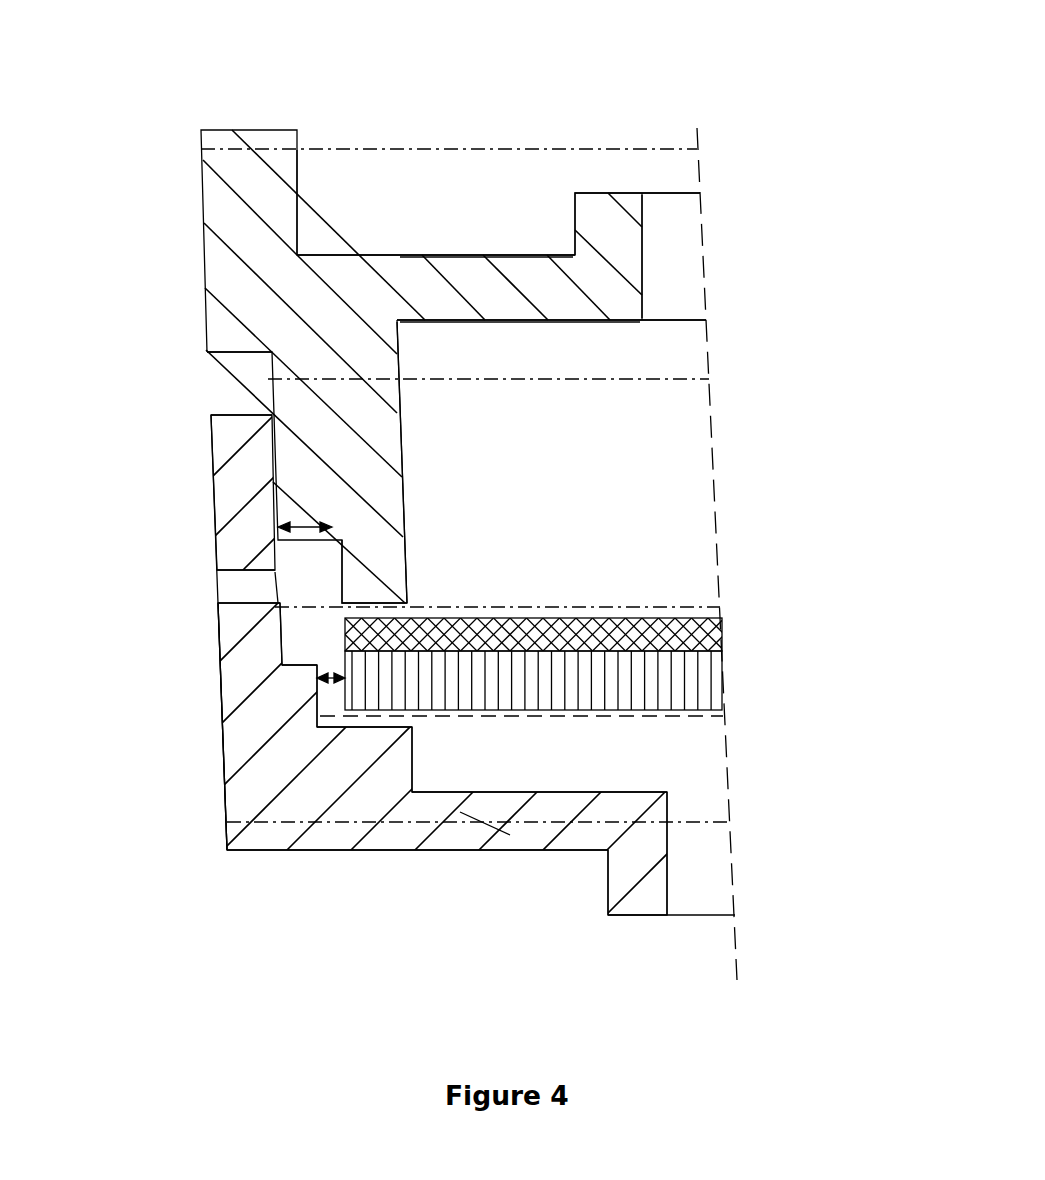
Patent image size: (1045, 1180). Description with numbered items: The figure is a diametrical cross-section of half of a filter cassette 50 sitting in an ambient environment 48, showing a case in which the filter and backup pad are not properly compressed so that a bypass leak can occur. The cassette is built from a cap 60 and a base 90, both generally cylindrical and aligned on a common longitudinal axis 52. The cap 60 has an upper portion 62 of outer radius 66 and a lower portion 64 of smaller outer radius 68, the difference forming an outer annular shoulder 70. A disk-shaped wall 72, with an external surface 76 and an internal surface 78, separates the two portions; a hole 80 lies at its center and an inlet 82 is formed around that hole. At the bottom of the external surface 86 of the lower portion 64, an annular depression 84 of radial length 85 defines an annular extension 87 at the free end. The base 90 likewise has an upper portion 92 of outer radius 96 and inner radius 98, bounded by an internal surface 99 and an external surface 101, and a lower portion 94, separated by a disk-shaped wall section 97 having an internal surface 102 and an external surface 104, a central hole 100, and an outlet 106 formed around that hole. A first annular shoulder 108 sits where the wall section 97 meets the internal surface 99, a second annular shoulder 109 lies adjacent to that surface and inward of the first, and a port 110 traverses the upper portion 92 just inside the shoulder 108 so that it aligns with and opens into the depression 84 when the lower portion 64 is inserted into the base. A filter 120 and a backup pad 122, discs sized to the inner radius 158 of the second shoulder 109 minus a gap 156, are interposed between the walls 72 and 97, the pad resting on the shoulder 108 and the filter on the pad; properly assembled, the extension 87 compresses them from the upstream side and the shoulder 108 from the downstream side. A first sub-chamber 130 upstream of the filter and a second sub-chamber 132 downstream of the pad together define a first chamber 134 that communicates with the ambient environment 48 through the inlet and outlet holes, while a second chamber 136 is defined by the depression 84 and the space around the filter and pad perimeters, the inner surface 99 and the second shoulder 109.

The ambient environment 48 is at (262, 25).
The filter cassette 50 is at (758, 80).
The longitudinal axis 52 is at (708, 335).
The cap 60 is at (158, 294).
The upper portion 62 is at (312, 188).
The lower portion 64 is at (405, 455).
The outer radius 66 is at (318, 149).
The outer radius 68 is at (498, 380).
The outer annular shoulder 70 is at (222, 352).
The wall 72 is at (462, 286).
The external surface 76 is at (330, 255).
The internal surface 78 is at (428, 322).
The hole 80 is at (690, 257).
The inlet 82 is at (595, 210).
The annular depression 84 is at (310, 567).
The radial length 85 is at (300, 525).
The external surface 86 is at (270, 463).
The annular extension 87 is at (407, 580).
The base 90 is at (188, 810).
The upper portion 92 is at (425, 756).
The lower portion 94 is at (595, 858).
The outer radius 96 is at (700, 810).
The wall section 97 is at (510, 835).
The inner radius 98 is at (542, 606).
The internal surface 99 is at (285, 647).
The hole 100 is at (715, 868).
The external surface 101 is at (223, 649).
The internal surface 102 is at (585, 790).
The external surface 104 is at (395, 855).
The outlet 106 is at (650, 905).
The first annular shoulder 108 is at (320, 757).
The second annular shoulder 109 is at (305, 687).
The port 110 is at (228, 585).
The filter 120 is at (700, 632).
The backup pad 122 is at (705, 684).
The first sub-chamber 130 is at (668, 518).
The second sub-chamber 132 is at (690, 758).
The first chamber 134 is at (906, 510).
The second chamber 136 is at (300, 627).
The gap 156 is at (313, 698).
The inner radius 158 is at (688, 718).